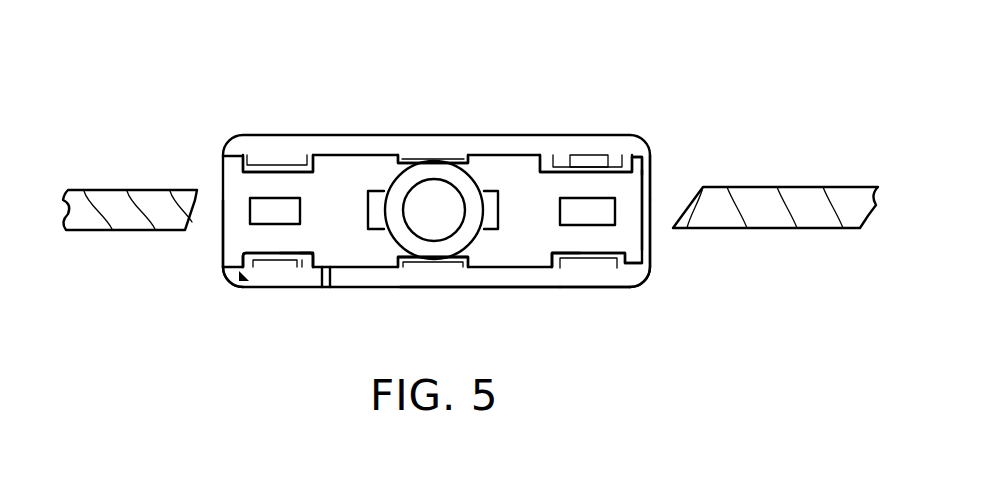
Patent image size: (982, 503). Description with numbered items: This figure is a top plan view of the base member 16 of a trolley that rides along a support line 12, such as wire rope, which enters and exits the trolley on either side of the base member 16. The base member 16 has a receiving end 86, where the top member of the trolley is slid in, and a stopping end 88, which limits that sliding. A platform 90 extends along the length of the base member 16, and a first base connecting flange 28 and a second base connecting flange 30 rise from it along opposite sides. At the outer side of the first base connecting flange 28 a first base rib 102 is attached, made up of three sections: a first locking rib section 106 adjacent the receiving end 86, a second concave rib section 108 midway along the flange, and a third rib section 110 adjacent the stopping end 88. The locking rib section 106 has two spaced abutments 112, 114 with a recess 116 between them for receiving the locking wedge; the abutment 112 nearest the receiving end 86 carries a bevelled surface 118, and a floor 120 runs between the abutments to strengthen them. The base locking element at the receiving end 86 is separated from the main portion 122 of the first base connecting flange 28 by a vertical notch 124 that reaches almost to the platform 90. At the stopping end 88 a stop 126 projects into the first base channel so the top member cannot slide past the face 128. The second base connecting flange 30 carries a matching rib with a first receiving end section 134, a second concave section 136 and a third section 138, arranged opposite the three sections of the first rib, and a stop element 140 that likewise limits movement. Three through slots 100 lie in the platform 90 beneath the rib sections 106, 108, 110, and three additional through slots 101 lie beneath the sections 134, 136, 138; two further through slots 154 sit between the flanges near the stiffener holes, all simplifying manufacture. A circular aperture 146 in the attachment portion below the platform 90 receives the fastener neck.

The support line 12 is at (810, 180).
The base member 16 is at (643, 76).
The first base connecting flange 28 is at (613, 288).
The second base connecting flange 30 is at (353, 135).
The receiving end 86 is at (219, 155).
The stopping end 88 is at (660, 241).
The platform 90 is at (640, 193).
The through slots 100 is at (313, 254).
The additional through slots 101 is at (320, 160).
The first base rib 102 is at (614, 274).
The first locking rib section 106 is at (235, 288).
The second concave rib section 108 is at (408, 265).
The third rib section 110 is at (568, 262).
The abutment 112 is at (253, 268).
The abutment 114 is at (302, 265).
The recess 116 is at (273, 267).
The bevelled surface 118 is at (223, 256).
The floor 120 is at (283, 253).
The main portion 122 is at (477, 288).
The vertical notch 124 is at (327, 290).
The stop 126 is at (652, 262).
The face 128 is at (652, 172).
The first receiving end section 134 is at (260, 160).
The second concave section 136 is at (455, 155).
The third section 138 is at (563, 160).
The stop element 140 is at (643, 158).
The aperture 146 is at (387, 172).
The through slots 154 is at (250, 205).